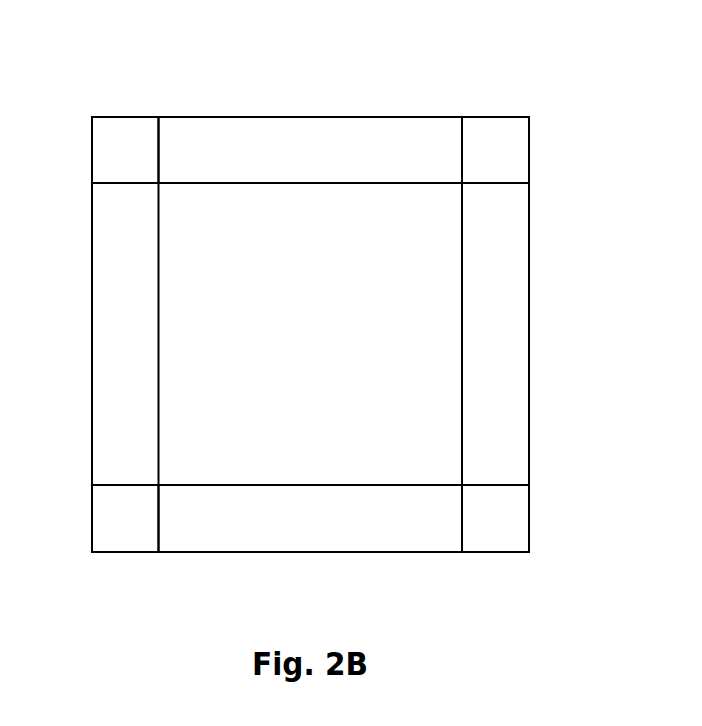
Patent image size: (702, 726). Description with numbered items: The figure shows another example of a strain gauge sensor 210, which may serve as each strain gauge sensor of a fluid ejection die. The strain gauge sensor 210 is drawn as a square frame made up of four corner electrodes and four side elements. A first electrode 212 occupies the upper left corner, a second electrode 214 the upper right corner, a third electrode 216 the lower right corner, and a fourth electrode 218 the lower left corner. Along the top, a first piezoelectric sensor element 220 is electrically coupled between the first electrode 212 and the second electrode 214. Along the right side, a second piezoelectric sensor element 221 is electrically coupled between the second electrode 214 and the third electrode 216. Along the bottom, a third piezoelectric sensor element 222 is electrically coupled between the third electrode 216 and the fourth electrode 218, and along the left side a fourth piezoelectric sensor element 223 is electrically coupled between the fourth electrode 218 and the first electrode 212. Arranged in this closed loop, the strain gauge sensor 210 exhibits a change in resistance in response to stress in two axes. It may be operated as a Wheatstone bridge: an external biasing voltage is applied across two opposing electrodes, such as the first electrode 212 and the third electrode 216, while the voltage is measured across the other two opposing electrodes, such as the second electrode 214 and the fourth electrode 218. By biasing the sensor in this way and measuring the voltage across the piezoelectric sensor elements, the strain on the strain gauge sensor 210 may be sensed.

The strain gauge sensor 210 is at (444, 76).
The first electrode 212 is at (123, 127).
The second electrode 214 is at (493, 127).
The third electrode 216 is at (511, 532).
The fourth electrode 218 is at (108, 533).
The first piezoelectric sensor element 220 is at (290, 122).
The second piezoelectric sensor element 221 is at (511, 342).
The third piezoelectric sensor element 222 is at (282, 497).
The fourth piezoelectric sensor element 223 is at (110, 343).